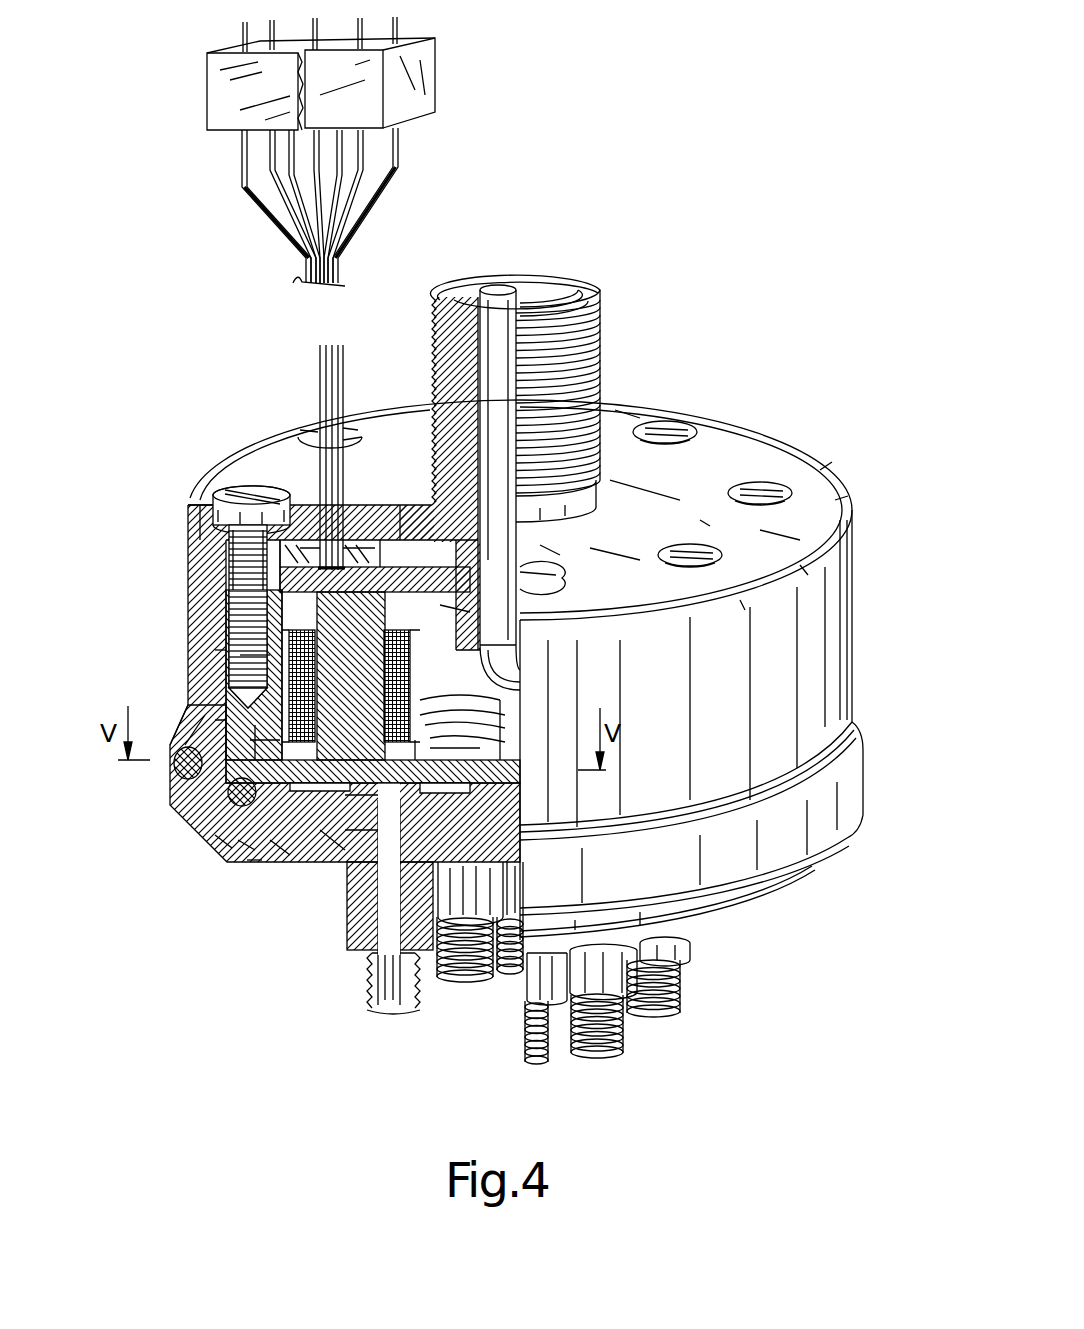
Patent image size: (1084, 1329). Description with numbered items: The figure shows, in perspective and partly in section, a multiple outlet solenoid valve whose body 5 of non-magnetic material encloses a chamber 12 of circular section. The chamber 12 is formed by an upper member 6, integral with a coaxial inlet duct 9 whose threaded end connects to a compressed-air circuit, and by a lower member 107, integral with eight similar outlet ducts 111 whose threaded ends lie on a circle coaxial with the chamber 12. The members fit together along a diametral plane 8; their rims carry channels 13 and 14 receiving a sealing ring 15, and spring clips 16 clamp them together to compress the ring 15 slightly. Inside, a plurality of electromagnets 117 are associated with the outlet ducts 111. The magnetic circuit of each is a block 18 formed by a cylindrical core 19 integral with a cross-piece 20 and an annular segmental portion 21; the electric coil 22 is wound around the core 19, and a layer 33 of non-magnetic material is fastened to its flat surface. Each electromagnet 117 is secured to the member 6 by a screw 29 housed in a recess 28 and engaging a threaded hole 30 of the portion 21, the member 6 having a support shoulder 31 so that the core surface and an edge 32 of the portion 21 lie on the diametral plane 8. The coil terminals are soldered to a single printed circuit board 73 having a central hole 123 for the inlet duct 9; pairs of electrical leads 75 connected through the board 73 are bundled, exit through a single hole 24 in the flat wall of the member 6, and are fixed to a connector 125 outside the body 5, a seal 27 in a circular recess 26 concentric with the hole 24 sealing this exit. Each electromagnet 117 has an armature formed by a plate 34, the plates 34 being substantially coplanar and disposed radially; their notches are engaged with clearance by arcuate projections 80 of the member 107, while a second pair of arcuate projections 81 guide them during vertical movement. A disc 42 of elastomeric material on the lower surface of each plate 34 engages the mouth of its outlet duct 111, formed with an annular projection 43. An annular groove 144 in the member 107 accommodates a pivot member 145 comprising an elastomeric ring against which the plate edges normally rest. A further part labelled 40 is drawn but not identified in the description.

The connector 125 is at (430, 70).
The electrical leads 75 is at (347, 345).
The seal 27 is at (298, 500).
The inlet duct 9 is at (498, 287).
The electromagnets 117 is at (508, 665).
The cylindrical core 19 is at (480, 693).
The block 18 is at (210, 598).
The recess 28 is at (213, 503).
The printed circuit board 73 is at (405, 540).
The cross-piece 20 is at (228, 548).
The screw 29 is at (245, 492).
The central hole 123 is at (622, 549).
The upper member 6 is at (800, 467).
The body 5 is at (853, 642).
The spring clips 16 is at (178, 748).
The lower member 107 is at (522, 860).
The outlet ducts 111 is at (475, 985).
The chamber 12 is at (505, 765).
The disc 42 is at (322, 833).
The annular projection 43 is at (346, 826).
The arcuate projections 80 is at (255, 862).
The edge 32 is at (278, 845).
The annular groove 144 is at (245, 845).
The pivot member 145 is at (230, 840).
The sealing ring 15 is at (190, 775).
The channel 14 is at (235, 803).
The channel 13 is at (195, 748).
The diametral plane 8 is at (215, 726).
The spacer 40 is at (248, 732).
The support shoulder 31 is at (228, 588).
The threaded hole 30 is at (238, 656).
The annular segmental portion 21 is at (215, 652).
The hole 24 is at (355, 562).
The circular recess 26 is at (385, 535).
The electric coil 22 is at (357, 694).
The layer 33 is at (462, 745).
The plate 34 is at (505, 778).
The projections 81 is at (505, 810).